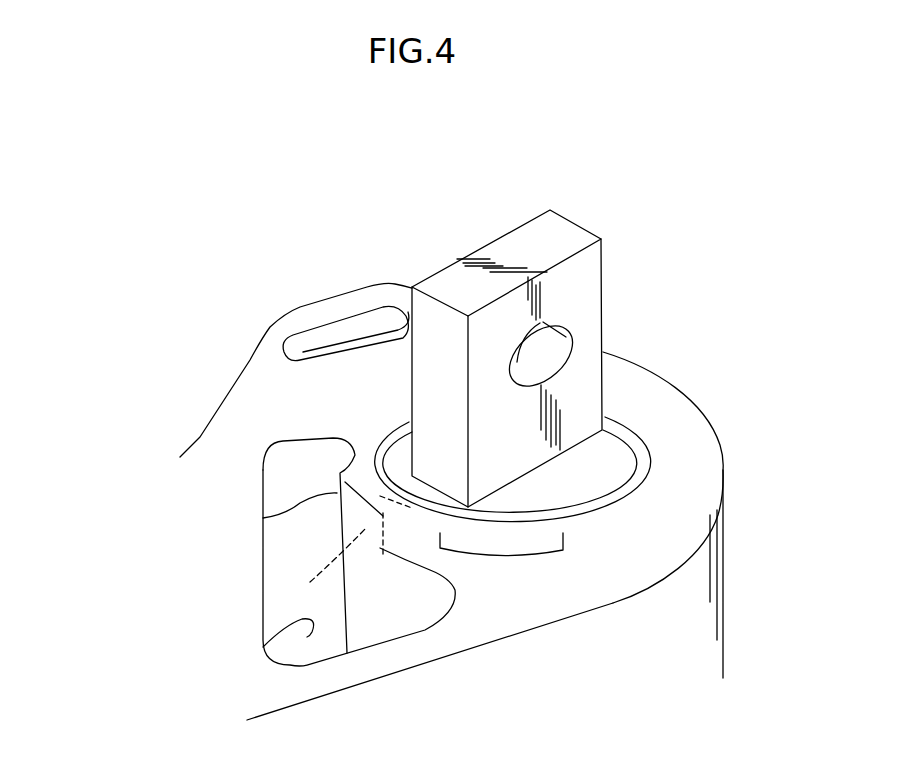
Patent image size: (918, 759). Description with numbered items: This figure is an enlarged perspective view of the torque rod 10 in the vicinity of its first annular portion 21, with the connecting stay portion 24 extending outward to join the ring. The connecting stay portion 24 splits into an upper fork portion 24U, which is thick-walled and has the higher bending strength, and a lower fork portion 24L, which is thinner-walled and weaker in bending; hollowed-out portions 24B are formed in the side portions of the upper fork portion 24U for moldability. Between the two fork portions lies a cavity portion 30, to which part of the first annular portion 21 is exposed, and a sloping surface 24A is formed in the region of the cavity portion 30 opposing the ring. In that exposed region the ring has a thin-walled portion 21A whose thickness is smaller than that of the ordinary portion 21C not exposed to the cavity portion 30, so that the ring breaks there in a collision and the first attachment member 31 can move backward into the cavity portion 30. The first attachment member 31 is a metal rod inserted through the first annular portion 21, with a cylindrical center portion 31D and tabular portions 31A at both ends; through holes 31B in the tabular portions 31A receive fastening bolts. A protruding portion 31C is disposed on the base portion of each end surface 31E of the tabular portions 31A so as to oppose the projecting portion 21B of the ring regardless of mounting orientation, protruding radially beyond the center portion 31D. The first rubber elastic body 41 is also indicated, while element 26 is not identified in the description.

The torque rod 10 is at (262, 216).
The first annular portion 21 is at (698, 388).
The thin-walled portion 21A is at (263, 518).
The projecting portion 21B is at (307, 585).
The ordinary portion 21C is at (715, 430).
The connecting stay portion 24 is at (188, 438).
The upper fork portion 24U is at (230, 397).
The sloping surface 24A is at (270, 554).
The hollowed-out portion 24B is at (363, 342).
The lower fork portion 24L is at (393, 692).
The gap 26 is at (167, 342).
The cavity portion 30 is at (263, 647).
The first attachment member 31 is at (493, 232).
The tabular portion 31A is at (575, 275).
The through hole 31B is at (550, 343).
The protruding portion 31C is at (618, 408).
The center portion 31D is at (567, 540).
The end surface 31E is at (570, 223).
The first rubber elastic body 41 is at (613, 513).